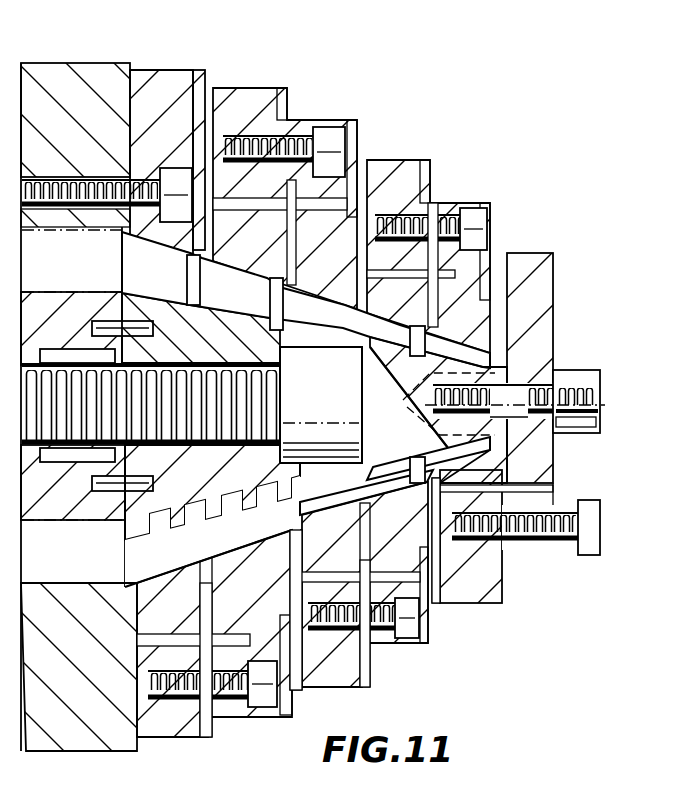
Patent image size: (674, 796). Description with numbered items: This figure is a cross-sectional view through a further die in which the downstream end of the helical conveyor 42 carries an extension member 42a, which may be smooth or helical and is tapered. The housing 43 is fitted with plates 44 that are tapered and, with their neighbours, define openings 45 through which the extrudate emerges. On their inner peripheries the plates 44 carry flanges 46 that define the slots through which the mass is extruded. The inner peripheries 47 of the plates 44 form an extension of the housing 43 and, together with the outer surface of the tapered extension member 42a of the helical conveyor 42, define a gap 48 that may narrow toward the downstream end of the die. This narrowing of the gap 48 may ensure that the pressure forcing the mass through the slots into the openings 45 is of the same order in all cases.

The helical conveyor 42 is at (60, 500).
The extension member 42a is at (177, 487).
The housing 43 is at (80, 100).
The plates 44 is at (246, 108).
The openings 45 is at (286, 236).
The flanges 46 is at (203, 259).
The inner peripheries 47 is at (250, 268).
The gap 48 is at (158, 283).